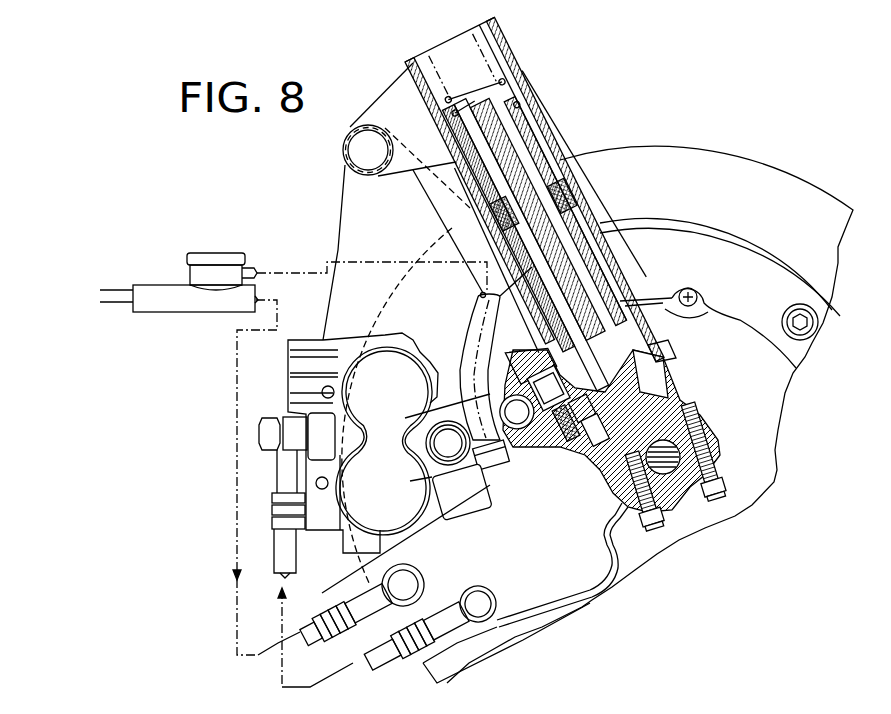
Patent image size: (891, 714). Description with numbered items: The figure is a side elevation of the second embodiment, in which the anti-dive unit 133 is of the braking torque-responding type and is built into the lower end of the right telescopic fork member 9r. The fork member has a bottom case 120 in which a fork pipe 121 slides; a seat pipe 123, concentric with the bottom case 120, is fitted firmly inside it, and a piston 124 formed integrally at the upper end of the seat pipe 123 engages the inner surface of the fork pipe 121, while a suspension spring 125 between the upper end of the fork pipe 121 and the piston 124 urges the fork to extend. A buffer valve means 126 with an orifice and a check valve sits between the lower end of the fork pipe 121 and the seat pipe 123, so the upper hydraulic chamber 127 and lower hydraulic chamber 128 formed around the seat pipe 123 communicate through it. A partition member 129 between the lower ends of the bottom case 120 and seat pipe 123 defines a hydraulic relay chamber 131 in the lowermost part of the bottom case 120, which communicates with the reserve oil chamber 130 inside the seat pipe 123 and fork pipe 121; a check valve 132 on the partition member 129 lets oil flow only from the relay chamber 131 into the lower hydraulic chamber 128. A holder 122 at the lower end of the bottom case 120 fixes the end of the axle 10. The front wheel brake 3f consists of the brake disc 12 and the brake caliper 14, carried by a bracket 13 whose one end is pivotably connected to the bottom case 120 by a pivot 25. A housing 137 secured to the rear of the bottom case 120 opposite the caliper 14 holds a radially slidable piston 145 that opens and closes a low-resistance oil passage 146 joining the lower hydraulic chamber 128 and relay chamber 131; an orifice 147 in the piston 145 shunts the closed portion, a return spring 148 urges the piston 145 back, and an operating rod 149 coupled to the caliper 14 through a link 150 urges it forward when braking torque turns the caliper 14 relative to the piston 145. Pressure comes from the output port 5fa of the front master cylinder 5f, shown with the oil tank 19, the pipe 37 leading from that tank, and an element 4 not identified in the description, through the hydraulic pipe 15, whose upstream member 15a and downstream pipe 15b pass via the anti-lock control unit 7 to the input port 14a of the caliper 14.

The fork pipe 121 is at (415, 62).
The reserve oil chamber 130 is at (472, 81).
The right telescopic fork member 9r is at (528, 84).
The suspension spring 125 is at (446, 103).
The bottom case 120 is at (456, 133).
The piston 124 is at (530, 110).
The seat pipe 123 is at (531, 143).
The upper hydraulic chamber 127 is at (544, 157).
The buffer valve means 126 is at (564, 181).
The lower hydraulic chamber 128 is at (590, 222).
The check valve 132 is at (631, 305).
The partition member 129 is at (660, 352).
The hydraulic relay chamber 131 is at (668, 382).
The holder 122 is at (717, 455).
The housing 137 is at (518, 360).
The link 150 is at (505, 380).
The oil passage 146 is at (550, 391).
The operating rod 149 is at (535, 452).
The orifice 147 is at (552, 440).
The return spring 148 is at (584, 456).
The piston 145 is at (525, 476).
The anti-dive unit 133 is at (565, 468).
The axle 10 is at (654, 491).
The anti-lock control unit 7 is at (513, 575).
The pipe 37 is at (480, 322).
The brake disc 12 is at (367, 350).
The brake caliper 14 is at (287, 364).
The input port 14a is at (290, 418).
The hydraulic pipe 15 is at (232, 479).
The upstream member of hydraulic pipe 15a is at (234, 507).
The downstream pipe 15b is at (282, 618).
The front master cylinder 5f is at (158, 284).
The output port 5fa is at (256, 297).
The hose 4 is at (112, 295).
The oil tank 19 is at (228, 257).
The front wheel brake 3f is at (320, 330).
The bracket 13 is at (343, 199).
The pivot 25 is at (362, 141).